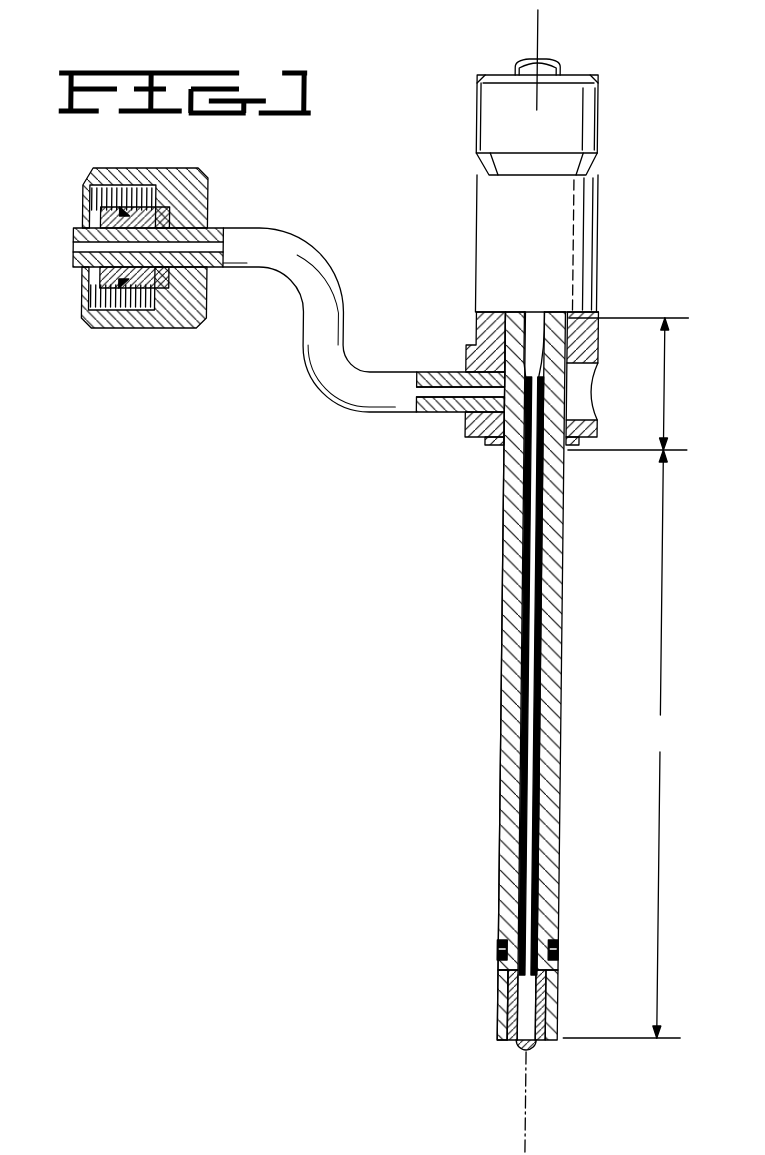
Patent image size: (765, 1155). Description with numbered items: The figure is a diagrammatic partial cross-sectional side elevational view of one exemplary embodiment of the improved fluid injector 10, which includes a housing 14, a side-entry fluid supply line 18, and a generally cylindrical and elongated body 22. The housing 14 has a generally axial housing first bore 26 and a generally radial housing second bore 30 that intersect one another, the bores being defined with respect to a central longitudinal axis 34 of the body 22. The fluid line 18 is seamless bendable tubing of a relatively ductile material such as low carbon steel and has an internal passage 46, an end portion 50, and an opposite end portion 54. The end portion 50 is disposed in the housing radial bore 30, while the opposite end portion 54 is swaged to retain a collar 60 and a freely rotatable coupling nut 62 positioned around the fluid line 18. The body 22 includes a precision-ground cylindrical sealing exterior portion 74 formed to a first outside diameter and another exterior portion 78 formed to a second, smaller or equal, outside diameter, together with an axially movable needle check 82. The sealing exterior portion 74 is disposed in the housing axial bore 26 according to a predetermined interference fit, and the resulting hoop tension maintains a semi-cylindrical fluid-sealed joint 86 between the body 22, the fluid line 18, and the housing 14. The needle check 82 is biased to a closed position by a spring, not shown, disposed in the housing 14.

The fluid injector 10 is at (652, 185).
The housing 14 is at (604, 254).
The side-entry fluid supply line 18 is at (323, 248).
The body 22 is at (571, 578).
The housing first bore 26 is at (506, 320).
The housing second bore 30 is at (469, 376).
The central longitudinal axis 34 is at (545, 38).
The internal passage 46 is at (438, 397).
The end portion 50 is at (487, 422).
The opposite end portion 54 is at (74, 278).
The collar 60 is at (143, 312).
The coupling nut 62 is at (177, 330).
The sealing exterior portion 74 is at (628, 384).
The another exterior portion 78 is at (625, 744).
The needle check 82 is at (541, 786).
The fluid-sealed joint 86 is at (520, 366).